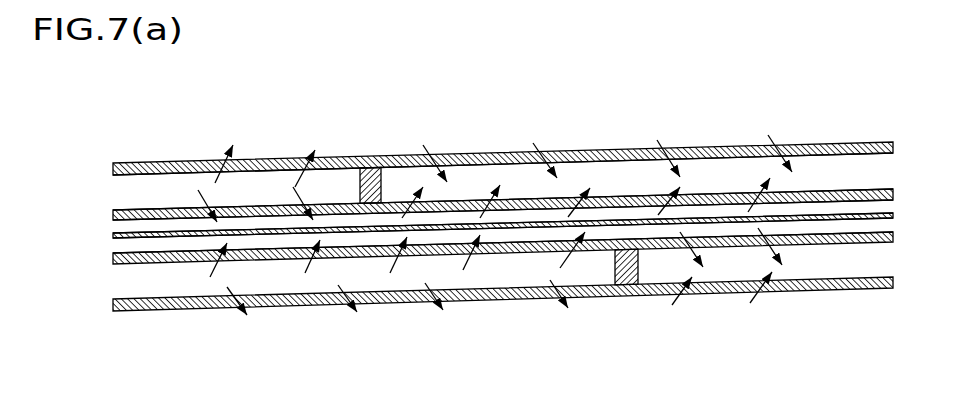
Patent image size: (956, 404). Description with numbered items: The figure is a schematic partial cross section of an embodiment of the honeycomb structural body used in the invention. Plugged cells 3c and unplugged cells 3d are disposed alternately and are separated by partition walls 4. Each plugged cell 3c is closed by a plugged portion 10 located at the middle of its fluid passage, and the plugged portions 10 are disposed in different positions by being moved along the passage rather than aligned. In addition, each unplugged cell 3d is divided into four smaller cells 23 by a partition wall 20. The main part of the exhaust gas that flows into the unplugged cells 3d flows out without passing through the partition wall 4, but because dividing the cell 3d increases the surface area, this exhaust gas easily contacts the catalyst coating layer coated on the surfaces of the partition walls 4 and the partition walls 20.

The plugged cell 3c is at (177, 187).
The unplugged cell 3d is at (265, 225).
The partition wall 4 is at (618, 195).
The plugged portion 10 is at (385, 178).
The partition wall 20 is at (718, 218).
The smaller cell 23 is at (287, 240).